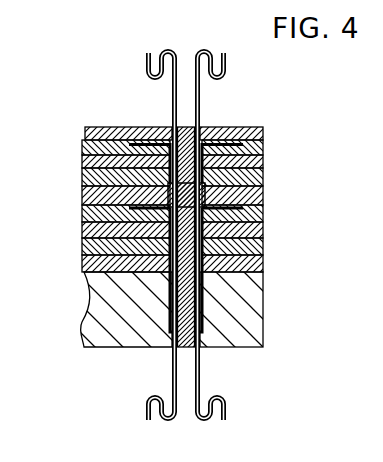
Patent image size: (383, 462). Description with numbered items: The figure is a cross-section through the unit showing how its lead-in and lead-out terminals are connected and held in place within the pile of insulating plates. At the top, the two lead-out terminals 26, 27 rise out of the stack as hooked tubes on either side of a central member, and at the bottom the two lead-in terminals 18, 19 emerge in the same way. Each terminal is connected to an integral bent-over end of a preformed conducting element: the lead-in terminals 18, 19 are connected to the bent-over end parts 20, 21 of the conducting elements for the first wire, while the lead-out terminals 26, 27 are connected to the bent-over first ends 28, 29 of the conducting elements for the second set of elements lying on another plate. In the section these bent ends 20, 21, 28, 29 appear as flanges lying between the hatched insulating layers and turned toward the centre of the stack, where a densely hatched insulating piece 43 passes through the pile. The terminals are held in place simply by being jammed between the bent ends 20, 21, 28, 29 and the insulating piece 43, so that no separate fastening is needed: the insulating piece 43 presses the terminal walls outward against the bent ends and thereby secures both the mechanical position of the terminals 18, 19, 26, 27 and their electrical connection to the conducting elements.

The lead-in terminal 18 is at (200, 367).
The lead-in terminal 19 is at (172, 375).
The bent-over end part 20 is at (203, 228).
The bent-over end part 21 is at (92, 226).
The lead-out terminal 26 is at (172, 100).
The lead-out terminal 27 is at (200, 109).
The bent-over first end 28 is at (97, 160).
The bent-over first end 29 is at (203, 162).
The insulating piece 43 is at (190, 300).